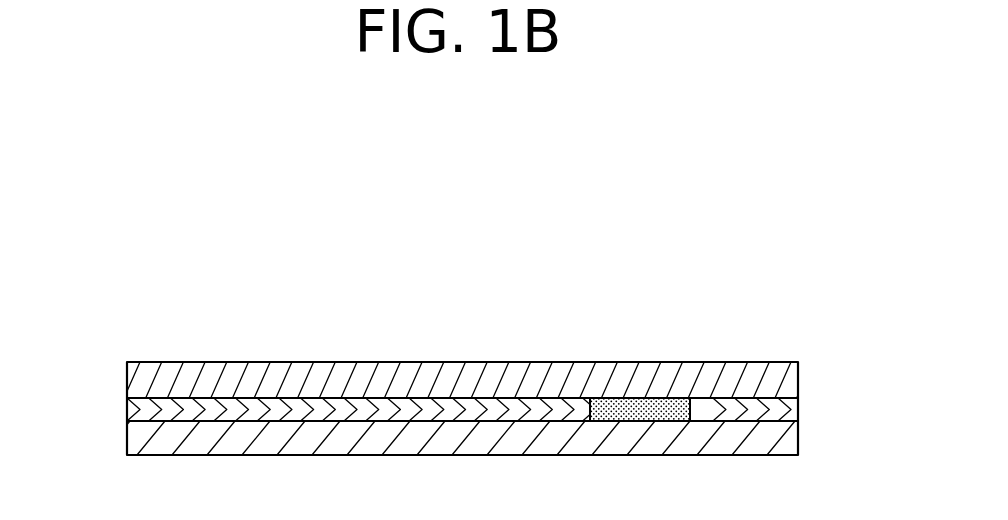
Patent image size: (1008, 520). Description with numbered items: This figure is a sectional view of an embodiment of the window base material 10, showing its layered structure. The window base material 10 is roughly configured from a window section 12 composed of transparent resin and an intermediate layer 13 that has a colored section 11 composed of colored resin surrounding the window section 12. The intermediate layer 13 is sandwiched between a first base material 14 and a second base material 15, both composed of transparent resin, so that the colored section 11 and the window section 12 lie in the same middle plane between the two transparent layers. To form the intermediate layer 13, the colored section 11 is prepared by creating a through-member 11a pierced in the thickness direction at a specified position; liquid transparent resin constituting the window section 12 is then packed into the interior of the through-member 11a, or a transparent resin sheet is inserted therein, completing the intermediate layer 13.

The window base material 10 is at (790, 320).
The colored section 11 is at (734, 400).
The through-member 11a is at (598, 397).
The window section 12 is at (637, 398).
The intermediate layer 13 is at (647, 211).
The first base material 14 is at (785, 435).
The second base material 15 is at (783, 378).